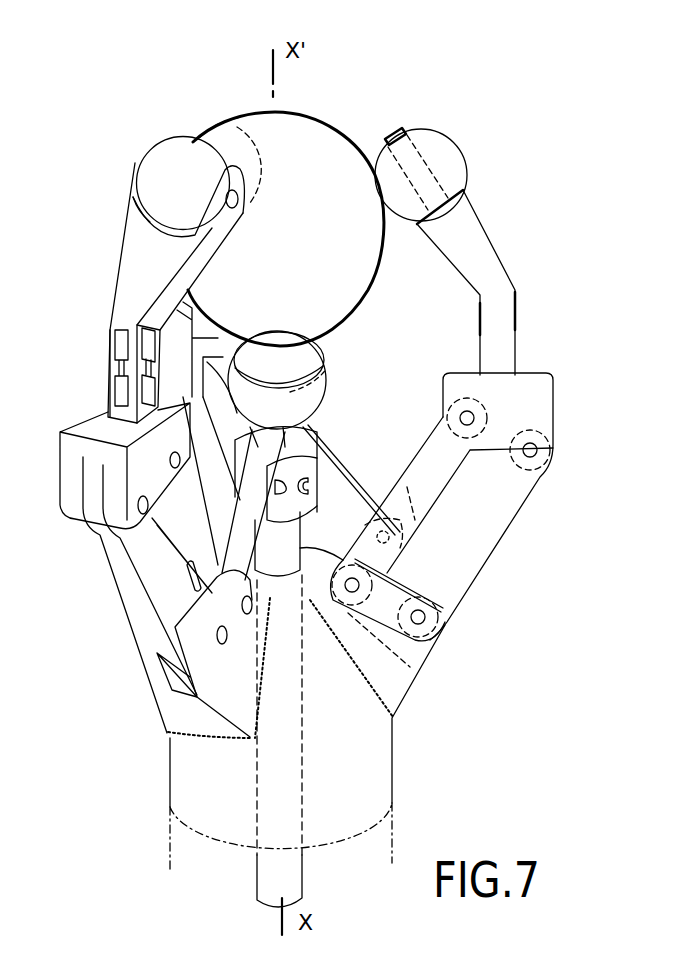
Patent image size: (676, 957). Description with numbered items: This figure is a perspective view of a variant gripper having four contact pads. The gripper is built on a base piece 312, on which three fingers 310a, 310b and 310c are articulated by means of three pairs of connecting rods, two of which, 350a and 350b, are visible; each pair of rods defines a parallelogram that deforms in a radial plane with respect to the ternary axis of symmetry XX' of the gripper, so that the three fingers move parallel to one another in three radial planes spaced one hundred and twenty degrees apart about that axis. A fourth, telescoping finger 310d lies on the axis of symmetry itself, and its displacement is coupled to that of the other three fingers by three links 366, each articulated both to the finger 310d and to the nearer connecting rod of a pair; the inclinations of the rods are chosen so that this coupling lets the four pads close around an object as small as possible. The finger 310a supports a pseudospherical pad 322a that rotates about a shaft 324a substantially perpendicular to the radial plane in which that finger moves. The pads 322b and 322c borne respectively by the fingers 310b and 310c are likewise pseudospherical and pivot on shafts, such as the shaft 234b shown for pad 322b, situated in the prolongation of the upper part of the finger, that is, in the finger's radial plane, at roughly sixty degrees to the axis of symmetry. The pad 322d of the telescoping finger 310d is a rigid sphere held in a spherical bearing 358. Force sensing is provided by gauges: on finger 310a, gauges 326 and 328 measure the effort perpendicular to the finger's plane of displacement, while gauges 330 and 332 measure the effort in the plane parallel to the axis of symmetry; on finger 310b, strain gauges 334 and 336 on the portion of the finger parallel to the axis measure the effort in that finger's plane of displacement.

The pseudospherical pad 322a is at (158, 160).
The pseudospherical pad 322b is at (462, 172).
The pseudospherical pad 322c is at (207, 123).
The pad 322d is at (277, 357).
The shaft 324a is at (240, 199).
The pin 234b is at (398, 123).
The finger 310a is at (143, 233).
The finger 310b is at (482, 248).
The finger 310c is at (196, 310).
The telescoping finger 310d is at (297, 530).
The base piece 312 is at (373, 768).
The gauge 326 is at (107, 428).
The gauge 328 is at (107, 332).
The gauge 330 is at (113, 378).
The gauge 332 is at (158, 325).
The strain gauge 334 is at (478, 320).
The strain gauge 336 is at (517, 313).
The pair of connecting rods 350a is at (197, 522).
The pair of connecting rods 350b is at (425, 497).
The spherical bearing 358 is at (327, 375).
The link 366 is at (284, 395).